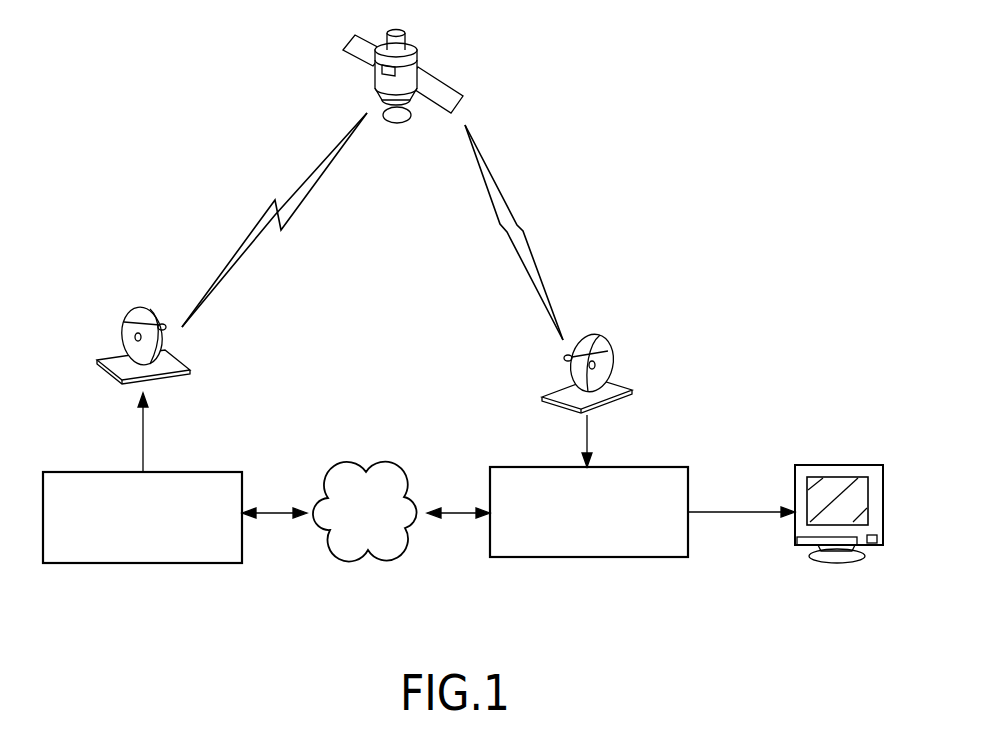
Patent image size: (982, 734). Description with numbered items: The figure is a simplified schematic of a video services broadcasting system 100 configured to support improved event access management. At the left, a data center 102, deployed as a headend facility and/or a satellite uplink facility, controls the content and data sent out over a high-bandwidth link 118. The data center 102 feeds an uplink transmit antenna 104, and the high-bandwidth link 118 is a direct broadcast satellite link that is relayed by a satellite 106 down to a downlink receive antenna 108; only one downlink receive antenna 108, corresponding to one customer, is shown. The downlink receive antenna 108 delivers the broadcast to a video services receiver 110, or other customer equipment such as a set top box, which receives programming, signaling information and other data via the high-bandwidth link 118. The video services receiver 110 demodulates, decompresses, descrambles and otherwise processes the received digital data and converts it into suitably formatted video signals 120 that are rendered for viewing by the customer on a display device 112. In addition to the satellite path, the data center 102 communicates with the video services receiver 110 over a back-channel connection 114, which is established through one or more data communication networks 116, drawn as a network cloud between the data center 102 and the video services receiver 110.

The video services broadcasting system 100 is at (240, 80).
The data center 102 is at (64, 472).
The uplink transmit antenna 104 is at (130, 307).
The satellite 106 is at (427, 57).
The downlink receive antenna 108 is at (605, 335).
The video services receiver 110 is at (665, 467).
The display device 112 is at (838, 465).
The back-channel connection 114 is at (334, 449).
The data communication networks 116 is at (390, 470).
The high-bandwidth link 118 is at (499, 195).
The video signals 120 is at (733, 513).